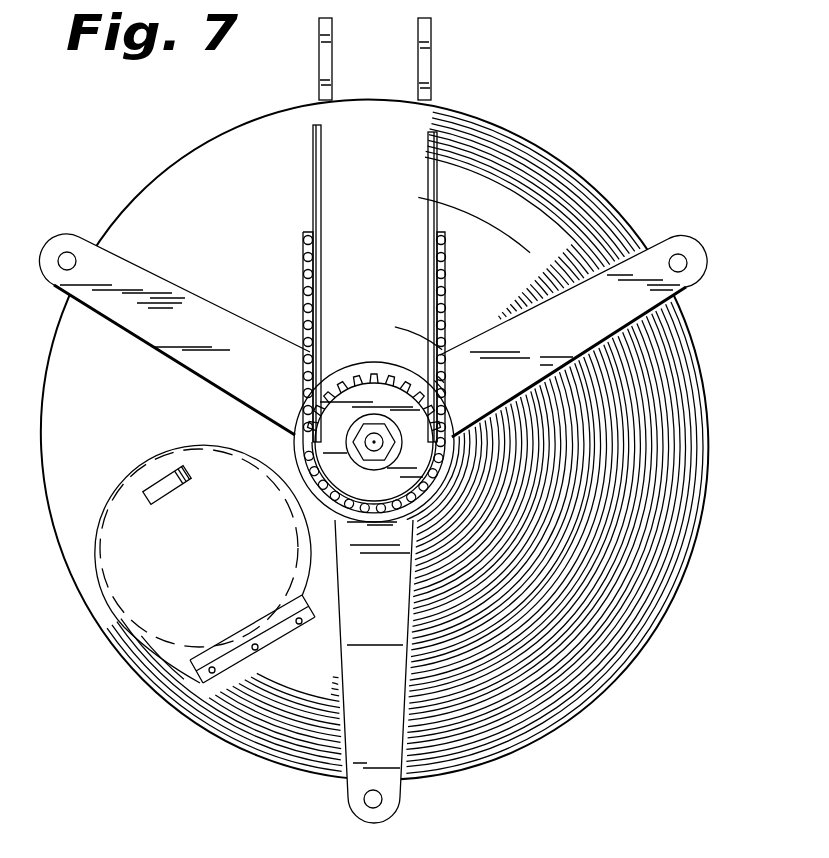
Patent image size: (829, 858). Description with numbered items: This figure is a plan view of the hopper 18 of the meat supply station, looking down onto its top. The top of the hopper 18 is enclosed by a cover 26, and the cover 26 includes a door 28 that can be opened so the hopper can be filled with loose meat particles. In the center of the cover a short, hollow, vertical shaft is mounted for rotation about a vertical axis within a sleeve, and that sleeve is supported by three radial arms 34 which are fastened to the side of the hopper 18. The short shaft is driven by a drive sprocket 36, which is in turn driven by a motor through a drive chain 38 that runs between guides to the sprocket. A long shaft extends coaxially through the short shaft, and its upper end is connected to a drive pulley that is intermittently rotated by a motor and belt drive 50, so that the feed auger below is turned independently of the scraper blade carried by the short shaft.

The hopper 18 is at (547, 150).
The cover 26 is at (245, 728).
The door 28 is at (137, 595).
The radial arms 34 is at (690, 286).
The drive sprocket 36 is at (375, 370).
The drive chain 38 is at (445, 288).
The motor and belt drive 50 is at (437, 202).